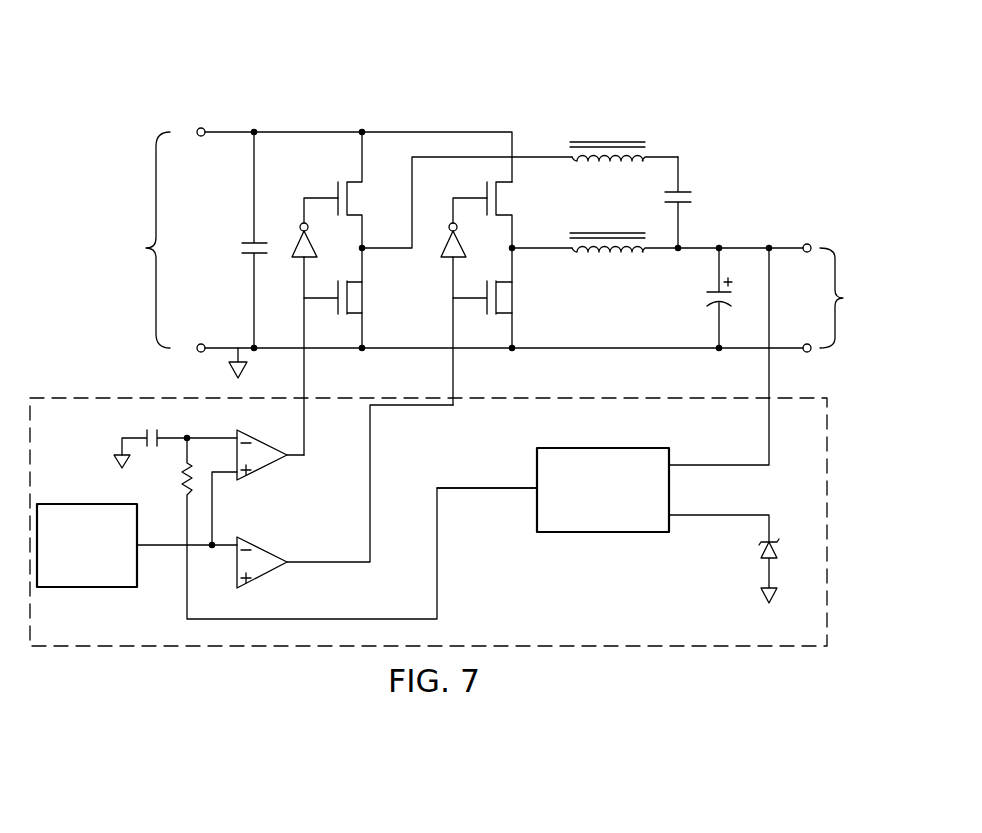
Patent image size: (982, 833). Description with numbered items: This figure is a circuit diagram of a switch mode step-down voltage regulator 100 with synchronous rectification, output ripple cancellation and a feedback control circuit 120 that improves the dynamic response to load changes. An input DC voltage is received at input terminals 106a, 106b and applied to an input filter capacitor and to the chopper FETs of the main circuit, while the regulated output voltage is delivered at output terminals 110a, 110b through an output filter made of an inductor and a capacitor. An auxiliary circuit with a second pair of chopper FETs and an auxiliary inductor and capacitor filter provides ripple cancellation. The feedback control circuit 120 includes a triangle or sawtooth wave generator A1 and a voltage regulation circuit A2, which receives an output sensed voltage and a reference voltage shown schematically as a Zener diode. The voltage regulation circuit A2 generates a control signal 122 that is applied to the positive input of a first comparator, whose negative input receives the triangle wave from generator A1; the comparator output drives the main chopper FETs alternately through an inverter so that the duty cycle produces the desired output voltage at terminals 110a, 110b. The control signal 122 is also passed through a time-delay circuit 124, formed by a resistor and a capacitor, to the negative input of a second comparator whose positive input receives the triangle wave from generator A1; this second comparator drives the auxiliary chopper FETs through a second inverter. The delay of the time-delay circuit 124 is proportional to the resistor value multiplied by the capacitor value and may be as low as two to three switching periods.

The switch mode step-down voltage regulator 100 is at (176, 62).
The input terminal 106a is at (198, 125).
The input terminal 106b is at (198, 354).
The output terminal 110a is at (810, 243).
The output terminal 110b is at (810, 254).
The feedback control circuit 120 is at (828, 451).
The control signal 122 is at (470, 487).
The time-delay circuit 124 is at (128, 481).
The triangle or sawtooth wave generator A1 is at (75, 588).
The voltage regulation circuit A2 is at (554, 533).